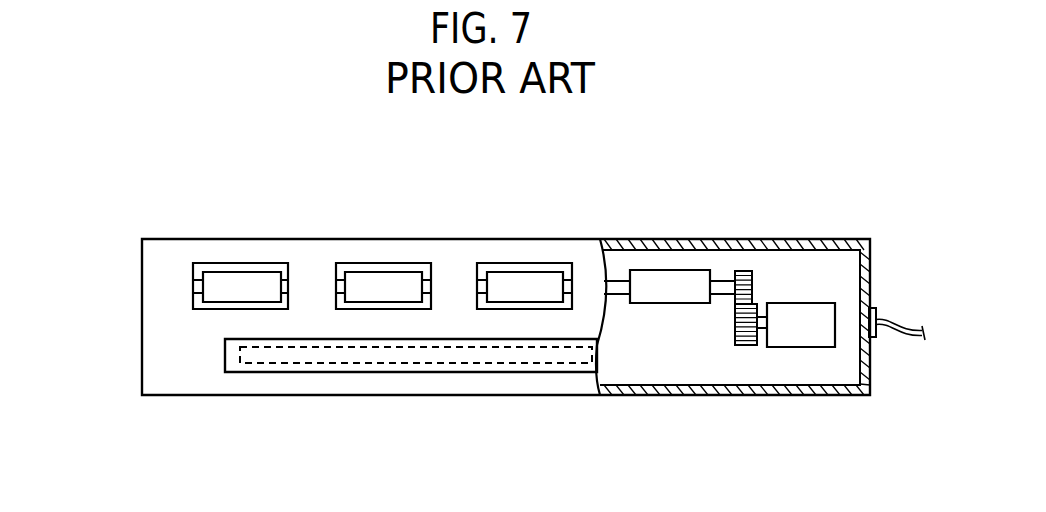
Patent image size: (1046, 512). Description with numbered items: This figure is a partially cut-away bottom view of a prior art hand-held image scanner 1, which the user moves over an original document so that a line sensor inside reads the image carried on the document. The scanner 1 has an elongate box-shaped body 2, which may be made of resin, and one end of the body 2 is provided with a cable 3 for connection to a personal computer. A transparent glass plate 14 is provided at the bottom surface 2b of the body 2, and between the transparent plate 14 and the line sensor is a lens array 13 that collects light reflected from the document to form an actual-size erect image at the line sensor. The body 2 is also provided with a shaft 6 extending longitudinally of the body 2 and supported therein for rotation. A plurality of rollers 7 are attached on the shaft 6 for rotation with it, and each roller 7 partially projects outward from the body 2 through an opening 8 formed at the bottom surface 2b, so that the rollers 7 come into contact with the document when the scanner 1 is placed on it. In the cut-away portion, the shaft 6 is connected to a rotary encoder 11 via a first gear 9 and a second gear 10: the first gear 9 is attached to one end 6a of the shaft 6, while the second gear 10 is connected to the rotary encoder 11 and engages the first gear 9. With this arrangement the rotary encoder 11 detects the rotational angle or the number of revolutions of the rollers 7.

The hand-held image scanner 1 is at (124, 222).
The body 2 is at (140, 317).
The bottom surface 2b is at (155, 359).
The cable 3 is at (892, 317).
The shaft 6 is at (613, 281).
The one end of the shaft 6a is at (726, 272).
The rollers 7 is at (246, 272).
The opening 8 is at (207, 263).
The first gear 9 is at (753, 288).
The second gear 10 is at (743, 345).
The rotary encoder 11 is at (807, 347).
The lens array 13 is at (485, 362).
The transparent glass plate 14 is at (352, 372).